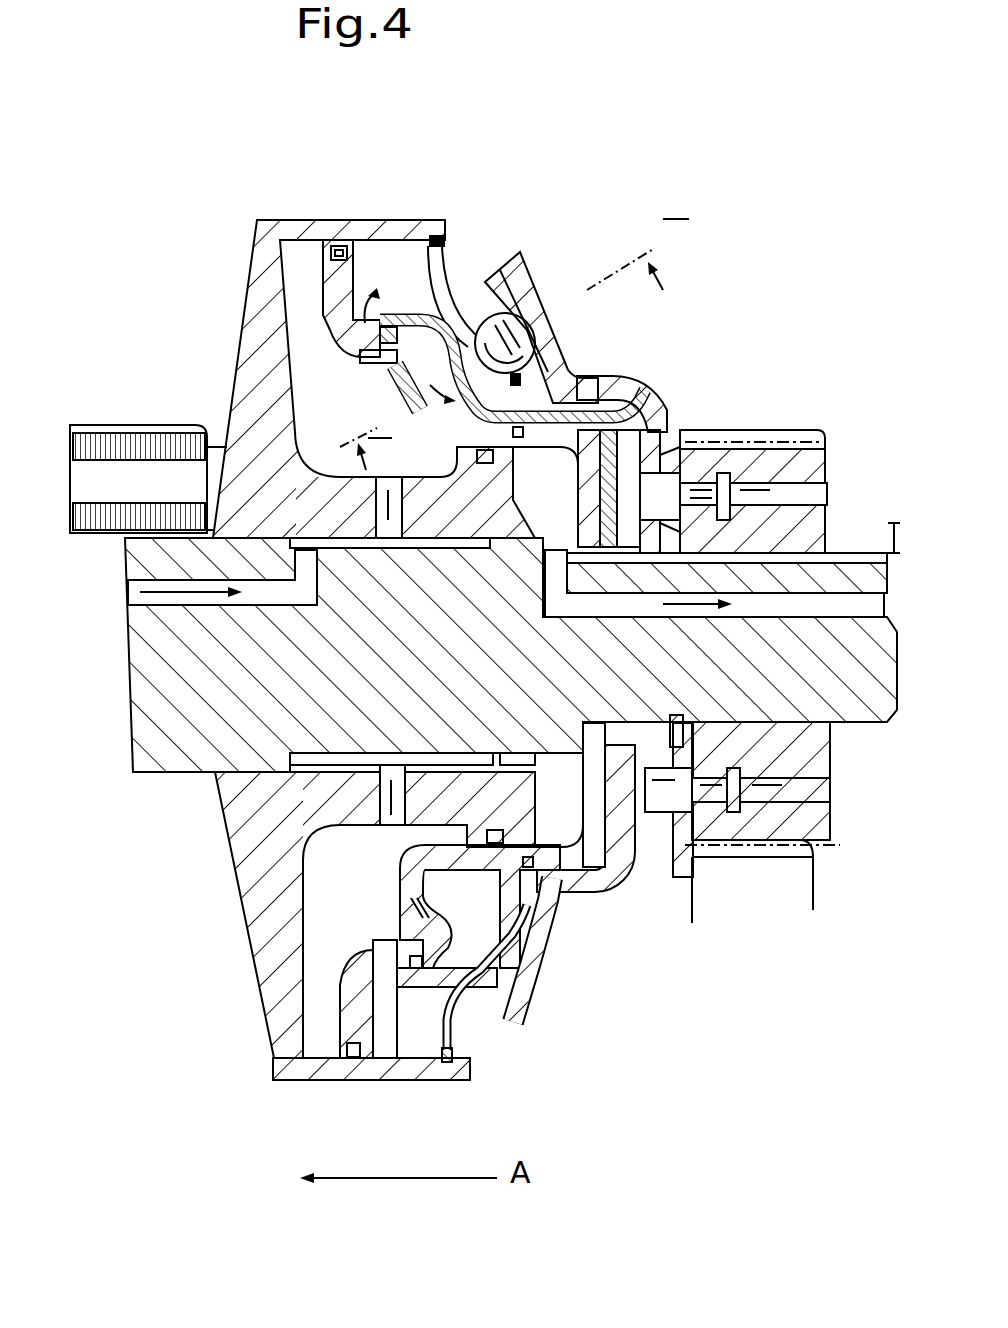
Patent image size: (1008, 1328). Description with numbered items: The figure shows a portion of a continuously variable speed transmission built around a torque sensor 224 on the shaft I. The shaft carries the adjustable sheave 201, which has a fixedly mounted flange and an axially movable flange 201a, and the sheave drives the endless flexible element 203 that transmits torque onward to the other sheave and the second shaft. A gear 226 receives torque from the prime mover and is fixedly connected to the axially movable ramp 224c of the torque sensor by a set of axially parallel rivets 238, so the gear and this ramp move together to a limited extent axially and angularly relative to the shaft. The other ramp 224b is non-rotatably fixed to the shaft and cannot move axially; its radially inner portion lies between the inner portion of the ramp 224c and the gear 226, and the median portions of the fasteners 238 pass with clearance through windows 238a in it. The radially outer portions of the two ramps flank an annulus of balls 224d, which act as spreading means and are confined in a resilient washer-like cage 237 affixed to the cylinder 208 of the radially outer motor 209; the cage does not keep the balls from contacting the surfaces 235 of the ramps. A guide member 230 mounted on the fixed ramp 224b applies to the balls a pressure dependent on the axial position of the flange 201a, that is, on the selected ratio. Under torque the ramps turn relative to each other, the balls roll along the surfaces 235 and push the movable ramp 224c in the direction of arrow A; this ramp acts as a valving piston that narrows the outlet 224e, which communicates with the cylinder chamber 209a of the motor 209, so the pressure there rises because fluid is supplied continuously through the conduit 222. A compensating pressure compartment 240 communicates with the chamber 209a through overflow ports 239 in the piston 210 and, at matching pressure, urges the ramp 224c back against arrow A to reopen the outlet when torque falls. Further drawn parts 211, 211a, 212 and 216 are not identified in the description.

The adjustable sheave 201 is at (210, 855).
The axially movable flange 201a is at (256, 340).
The endless flexible element 203 is at (128, 485).
The cylinder 208 is at (465, 1082).
The motor 209 is at (367, 913).
The cylinder chamber 209a is at (300, 265).
The piston 210 is at (353, 1017).
The sleeve 211 is at (563, 823).
The sleeve recess 211a is at (655, 450).
The impeller shroud 212 is at (585, 848).
The shaft passage 216 is at (848, 600).
The conduit 222 is at (163, 600).
The torque sensor 224 is at (710, 268).
The ramp 224b is at (635, 382).
The axially movable ramp 224c is at (640, 430).
The balls 224d is at (542, 300).
The outlet 224e is at (385, 330).
The gear 226 is at (800, 750).
The guide member 230 is at (507, 328).
The surfaces 235 is at (502, 293).
The cage 237 is at (468, 1012).
The rivets 238 is at (657, 807).
The windows 238a is at (710, 428).
The overflow ports 239 is at (397, 387).
The compensating pressure compartment 240 is at (483, 398).